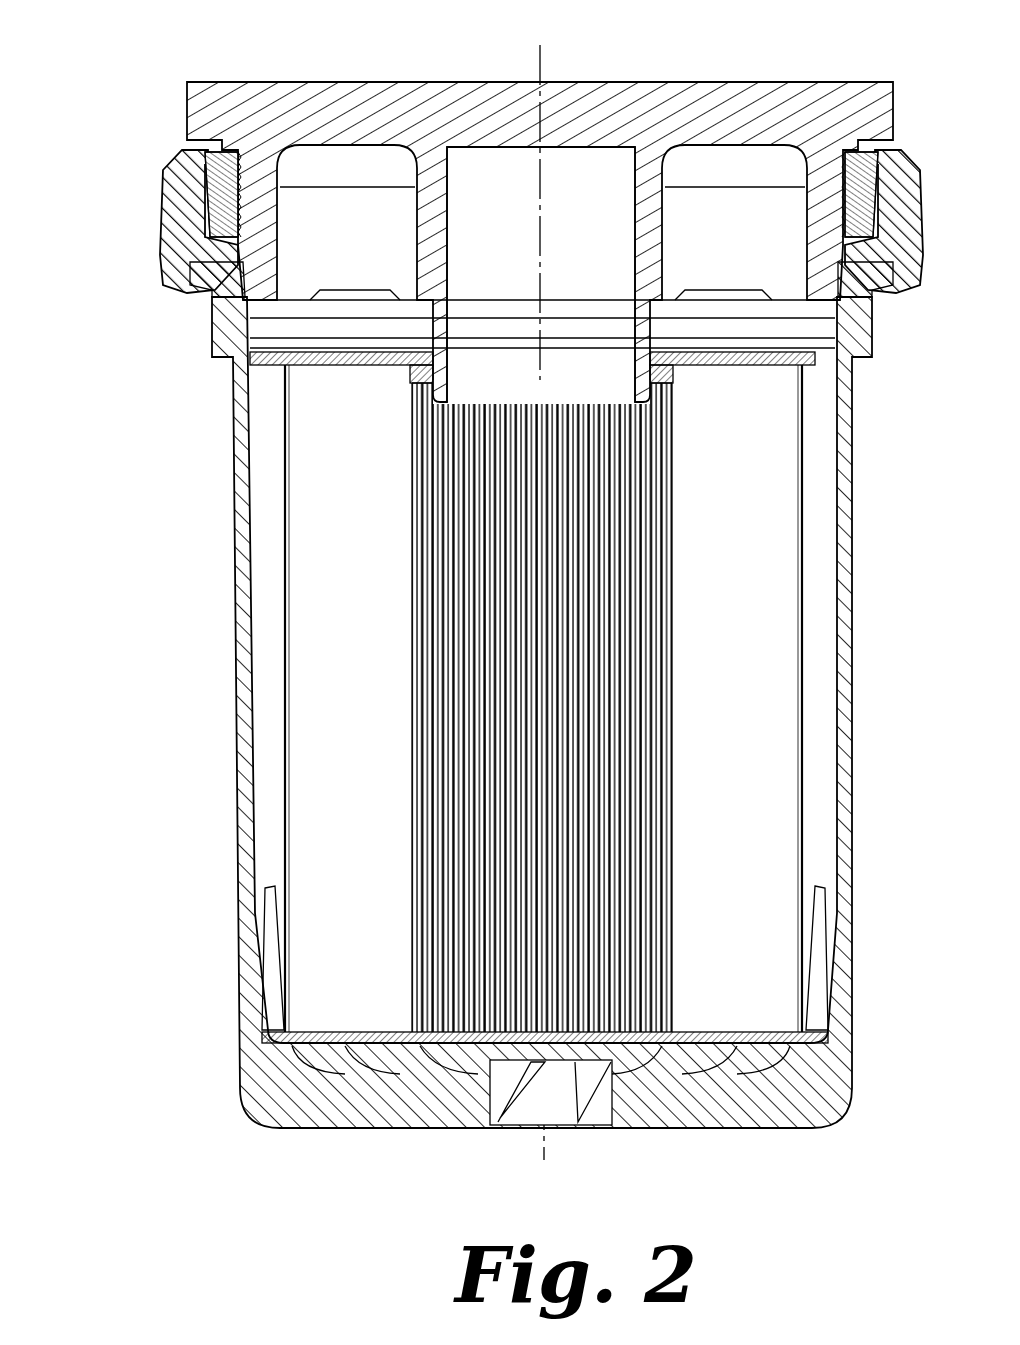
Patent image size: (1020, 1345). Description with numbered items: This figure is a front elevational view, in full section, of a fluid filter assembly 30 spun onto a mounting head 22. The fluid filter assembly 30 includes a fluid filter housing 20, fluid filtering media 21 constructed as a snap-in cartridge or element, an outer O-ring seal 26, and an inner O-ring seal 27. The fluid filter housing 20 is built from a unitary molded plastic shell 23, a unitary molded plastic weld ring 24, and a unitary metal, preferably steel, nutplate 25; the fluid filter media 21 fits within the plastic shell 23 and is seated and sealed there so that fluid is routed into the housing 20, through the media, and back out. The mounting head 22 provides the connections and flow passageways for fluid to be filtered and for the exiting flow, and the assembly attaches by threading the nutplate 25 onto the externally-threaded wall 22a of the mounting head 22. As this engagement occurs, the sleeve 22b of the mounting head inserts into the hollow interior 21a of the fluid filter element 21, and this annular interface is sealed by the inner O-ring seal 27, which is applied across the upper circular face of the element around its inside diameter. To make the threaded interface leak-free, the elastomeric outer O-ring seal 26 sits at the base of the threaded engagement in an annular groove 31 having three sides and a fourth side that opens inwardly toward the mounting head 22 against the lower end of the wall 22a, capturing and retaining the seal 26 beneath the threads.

The fluid filter housing 20 is at (485, 209).
The fluid filtering media 21 is at (531, 712).
The hollow interior 21a is at (440, 660).
The mounting head 22 is at (535, 209).
The externally-threaded wall 22a is at (278, 228).
The sleeve 22b is at (438, 222).
The shell 23 is at (243, 937).
The weld ring 24 is at (186, 165).
The nutplate 25 is at (255, 170).
The outer O-ring seal 26 is at (193, 270).
The inner O-ring seal 27 is at (668, 398).
The fluid filter assembly 30 is at (466, 700).
The annular groove 31 is at (266, 272).